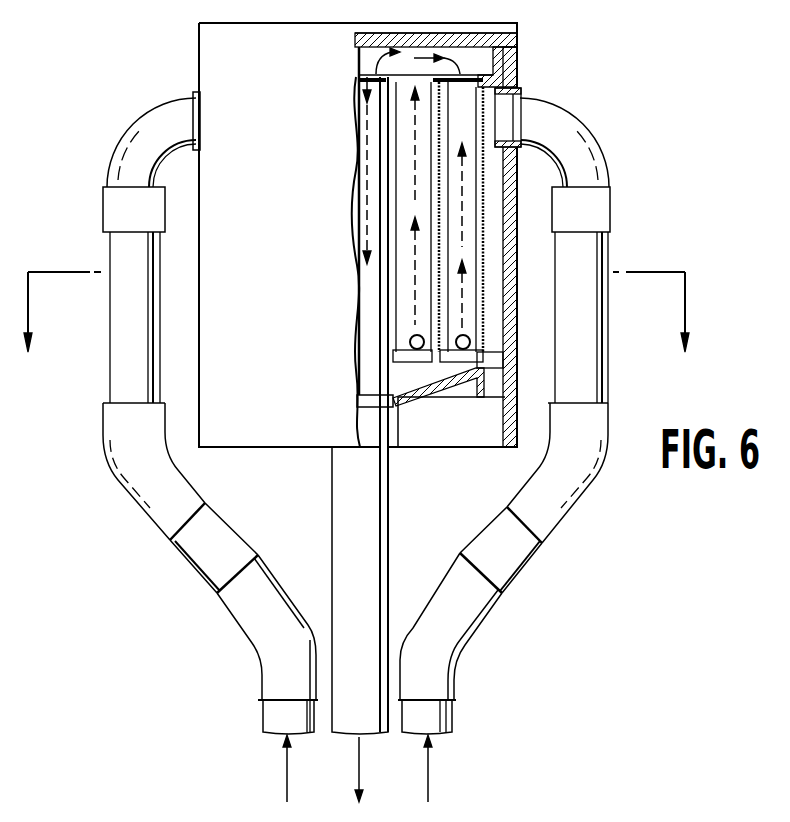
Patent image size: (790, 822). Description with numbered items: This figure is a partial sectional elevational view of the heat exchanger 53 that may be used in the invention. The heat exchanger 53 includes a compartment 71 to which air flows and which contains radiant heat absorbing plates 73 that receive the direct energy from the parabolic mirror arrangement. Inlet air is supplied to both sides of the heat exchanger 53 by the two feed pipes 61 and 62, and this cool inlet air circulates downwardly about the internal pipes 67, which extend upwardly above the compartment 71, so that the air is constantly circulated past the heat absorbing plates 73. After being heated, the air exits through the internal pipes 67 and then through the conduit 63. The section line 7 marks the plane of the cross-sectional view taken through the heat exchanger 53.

The section line 7- 7 is at (358, 325).
The heat exchanger 53 is at (510, 287).
The feed pipe 61 is at (428, 717).
The feed pipe 62 is at (279, 714).
The conduit 63 is at (374, 536).
The internal pipes 67 is at (514, 98).
The compartment 71 is at (496, 375).
The radiant heat absorbing plates 73 is at (449, 399).